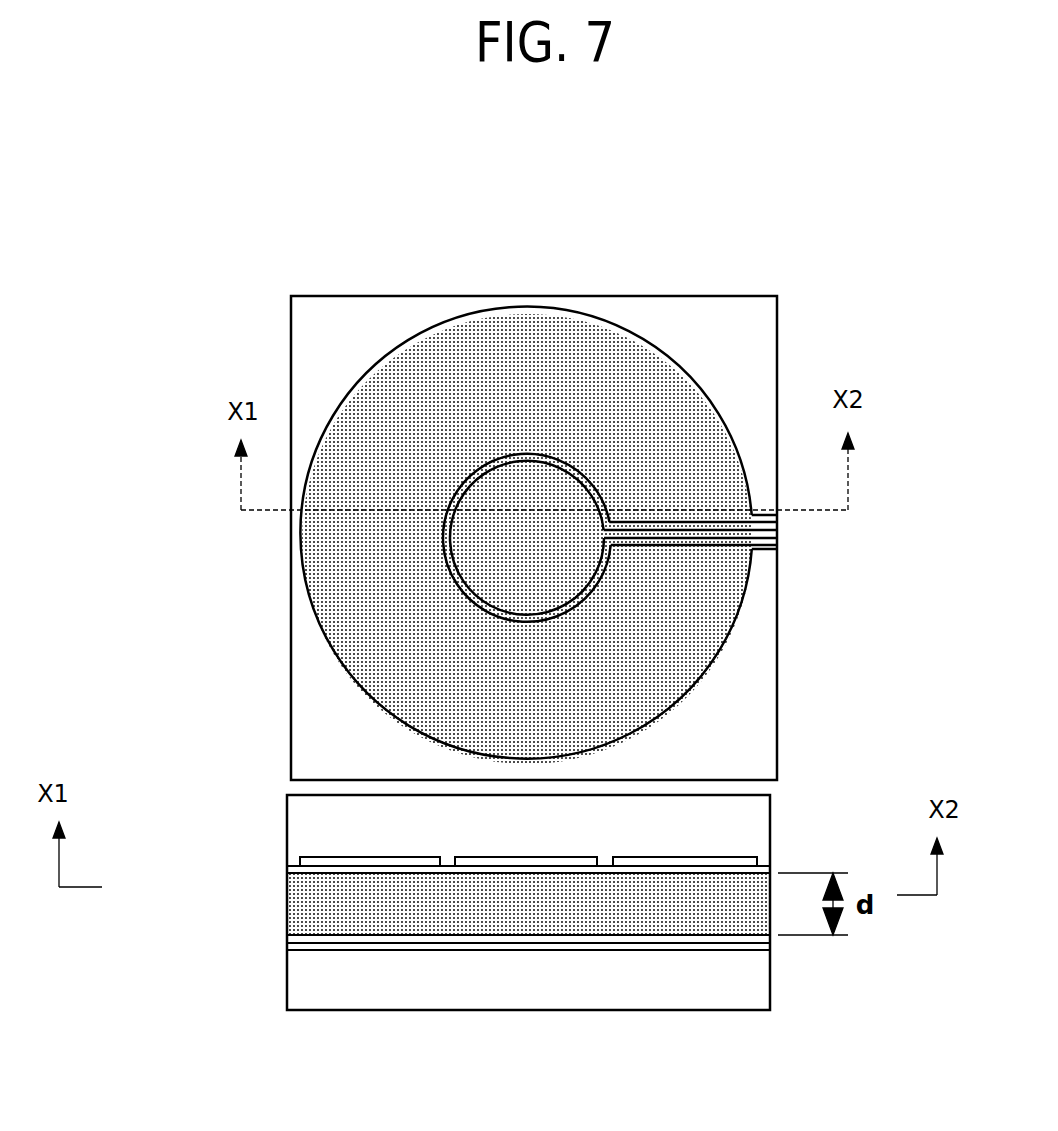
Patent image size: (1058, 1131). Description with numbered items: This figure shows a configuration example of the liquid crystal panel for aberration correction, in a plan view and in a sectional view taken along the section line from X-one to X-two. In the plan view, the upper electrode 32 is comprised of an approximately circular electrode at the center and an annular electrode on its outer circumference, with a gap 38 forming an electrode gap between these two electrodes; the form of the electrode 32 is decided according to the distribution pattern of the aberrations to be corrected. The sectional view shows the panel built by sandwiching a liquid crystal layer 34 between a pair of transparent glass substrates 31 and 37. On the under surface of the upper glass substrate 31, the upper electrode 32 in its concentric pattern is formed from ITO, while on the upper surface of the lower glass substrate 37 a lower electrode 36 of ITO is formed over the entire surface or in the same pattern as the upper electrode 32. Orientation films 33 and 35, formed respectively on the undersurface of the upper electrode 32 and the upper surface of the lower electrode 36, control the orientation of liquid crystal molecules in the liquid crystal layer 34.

The upper glass substrate 31 is at (310, 800).
The upper electrode 32 is at (348, 857).
The orientation film 33 is at (290, 863).
The liquid crystal layer 34 is at (297, 913).
The orientation film 35 is at (362, 943).
The lower electrode 36 is at (448, 950).
The lower glass substrate 37 is at (577, 985).
The gap 38 is at (740, 545).